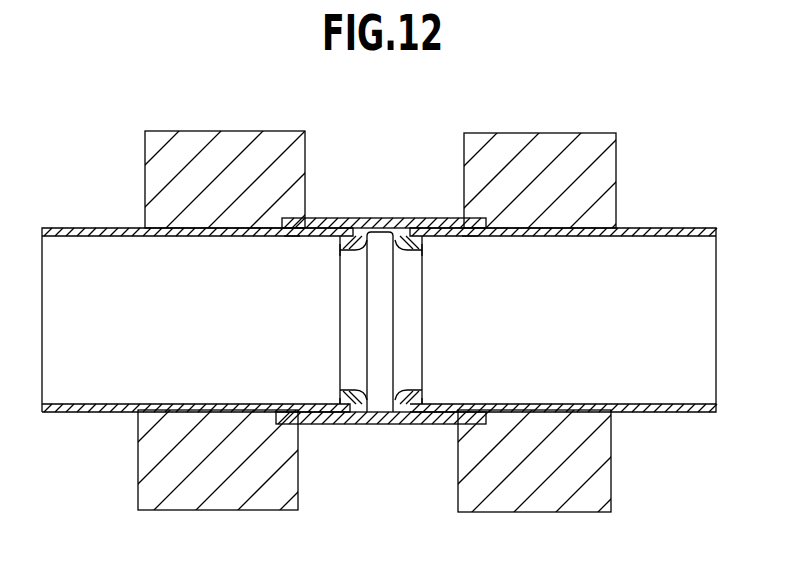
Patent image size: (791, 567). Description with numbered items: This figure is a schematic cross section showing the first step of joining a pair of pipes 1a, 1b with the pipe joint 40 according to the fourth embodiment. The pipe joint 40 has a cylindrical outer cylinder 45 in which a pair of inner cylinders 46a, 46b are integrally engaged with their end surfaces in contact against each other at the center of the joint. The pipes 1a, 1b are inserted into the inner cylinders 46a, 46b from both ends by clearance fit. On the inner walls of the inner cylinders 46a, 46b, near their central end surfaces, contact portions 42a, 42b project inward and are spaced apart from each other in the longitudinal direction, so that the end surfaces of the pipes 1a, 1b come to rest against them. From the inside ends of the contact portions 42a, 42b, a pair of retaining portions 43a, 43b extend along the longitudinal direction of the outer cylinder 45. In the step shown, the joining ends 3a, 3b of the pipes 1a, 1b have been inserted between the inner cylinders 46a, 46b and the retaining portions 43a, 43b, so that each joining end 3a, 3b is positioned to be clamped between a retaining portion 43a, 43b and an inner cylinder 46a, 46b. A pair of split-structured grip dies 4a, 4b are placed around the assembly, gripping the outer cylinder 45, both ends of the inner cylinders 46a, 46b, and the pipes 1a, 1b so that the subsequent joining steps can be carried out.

The pipe 1a is at (676, 228).
The pipe 1b is at (75, 228).
The joining end 3a is at (423, 402).
The joining end 3b is at (340, 401).
The grip die 4a is at (518, 133).
The grip die 4b is at (205, 131).
The pipe joint 40 is at (368, 432).
The contact portion 42a is at (405, 236).
The contact portion 42b is at (355, 236).
The retaining portion 43a is at (424, 252).
The retaining portion 43b is at (340, 252).
The outer cylinder 45 is at (328, 218).
The inner cylinder 46a is at (470, 237).
The inner cylinder 46b is at (292, 236).